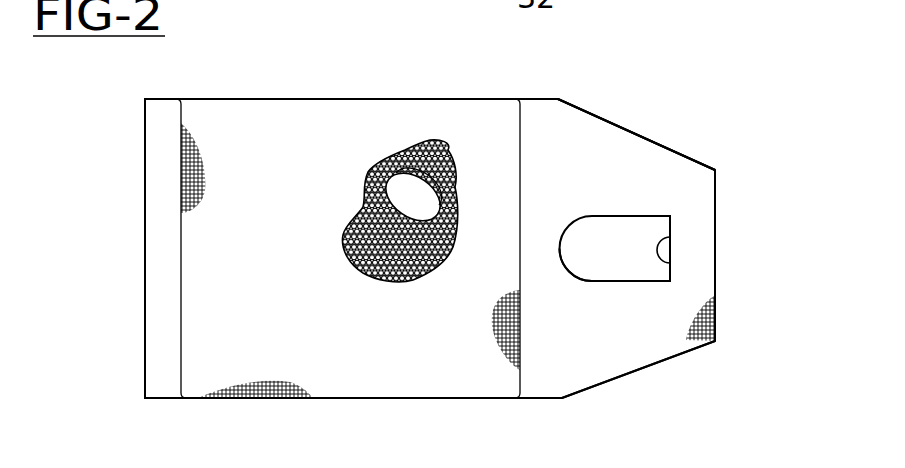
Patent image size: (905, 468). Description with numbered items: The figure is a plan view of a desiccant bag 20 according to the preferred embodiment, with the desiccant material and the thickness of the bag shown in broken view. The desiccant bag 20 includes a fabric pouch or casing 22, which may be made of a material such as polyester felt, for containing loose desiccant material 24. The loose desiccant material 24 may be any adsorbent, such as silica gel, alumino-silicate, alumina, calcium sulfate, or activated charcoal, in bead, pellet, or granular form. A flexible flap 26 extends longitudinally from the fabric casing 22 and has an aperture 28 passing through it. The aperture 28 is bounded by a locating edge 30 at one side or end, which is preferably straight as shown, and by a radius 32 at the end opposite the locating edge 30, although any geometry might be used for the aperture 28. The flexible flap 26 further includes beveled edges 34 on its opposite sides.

The desiccant bag 20 is at (284, 126).
The fabric casing 22 is at (255, 386).
The loose desiccant material 24 is at (433, 132).
The flexible flap 26 is at (605, 158).
The aperture 28 is at (628, 250).
The locating edge 30 is at (656, 262).
The radius 32 is at (560, 257).
The beveled edges 34 is at (684, 153).